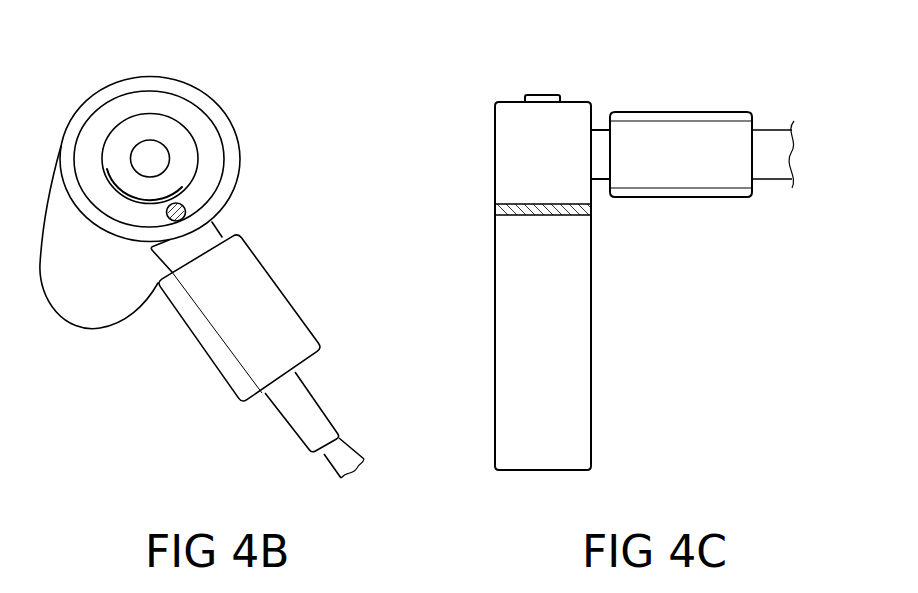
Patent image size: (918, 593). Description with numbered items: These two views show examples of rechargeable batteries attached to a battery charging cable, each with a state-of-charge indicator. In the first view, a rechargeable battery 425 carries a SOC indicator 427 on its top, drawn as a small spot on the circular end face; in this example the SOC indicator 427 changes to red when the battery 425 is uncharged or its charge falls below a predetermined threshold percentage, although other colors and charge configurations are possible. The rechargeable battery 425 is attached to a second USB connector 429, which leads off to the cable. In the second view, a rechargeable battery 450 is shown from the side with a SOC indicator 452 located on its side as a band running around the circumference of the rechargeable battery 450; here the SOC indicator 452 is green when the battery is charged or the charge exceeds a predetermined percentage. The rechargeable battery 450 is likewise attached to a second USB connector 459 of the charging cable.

In FIG. 4B, the rechargeable battery 425 is at (42, 297).
In FIG. 4B, the SOC indicator 427 is at (185, 204).
In FIG. 4B, the second USB connector 429 is at (262, 259).
In FIG. 4C, the rechargeable battery 450 is at (591, 346).
In FIG. 4C, the SOC indicator 452 is at (495, 211).
In FIG. 4C, the second USB connector 459 is at (660, 112).